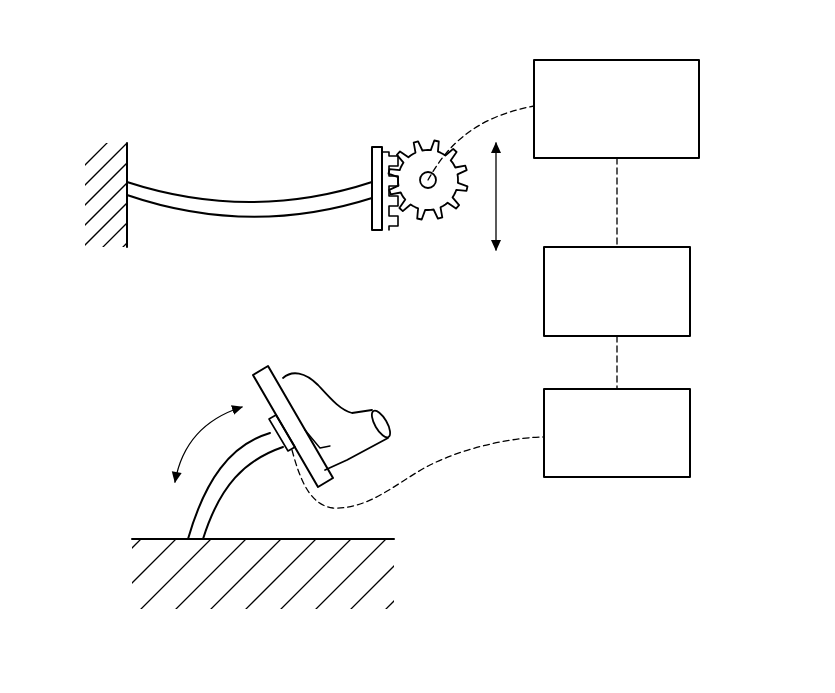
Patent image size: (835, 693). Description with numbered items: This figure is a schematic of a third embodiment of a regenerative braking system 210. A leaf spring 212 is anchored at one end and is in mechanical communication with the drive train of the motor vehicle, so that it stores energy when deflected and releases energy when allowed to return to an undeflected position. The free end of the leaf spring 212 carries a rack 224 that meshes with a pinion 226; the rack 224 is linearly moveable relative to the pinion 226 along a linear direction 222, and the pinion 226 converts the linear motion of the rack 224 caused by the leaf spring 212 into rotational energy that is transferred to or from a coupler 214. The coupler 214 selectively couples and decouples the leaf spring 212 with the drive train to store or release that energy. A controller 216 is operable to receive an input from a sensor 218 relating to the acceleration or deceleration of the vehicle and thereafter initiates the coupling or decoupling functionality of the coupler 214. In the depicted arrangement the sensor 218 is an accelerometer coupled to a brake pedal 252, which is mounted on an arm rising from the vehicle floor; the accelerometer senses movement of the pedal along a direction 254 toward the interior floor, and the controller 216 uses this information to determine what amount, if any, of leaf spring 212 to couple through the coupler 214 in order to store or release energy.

The regenerative braking system 210 is at (140, 57).
The leaf spring 212 is at (198, 207).
The coupler 214 is at (699, 122).
The controller 216 is at (690, 300).
The sensor 218 is at (690, 442).
The linear direction 222 is at (496, 212).
The rack 224 is at (375, 230).
The pinion 226 is at (440, 200).
The brake pedal 252 is at (260, 367).
The direction 254 is at (200, 443).